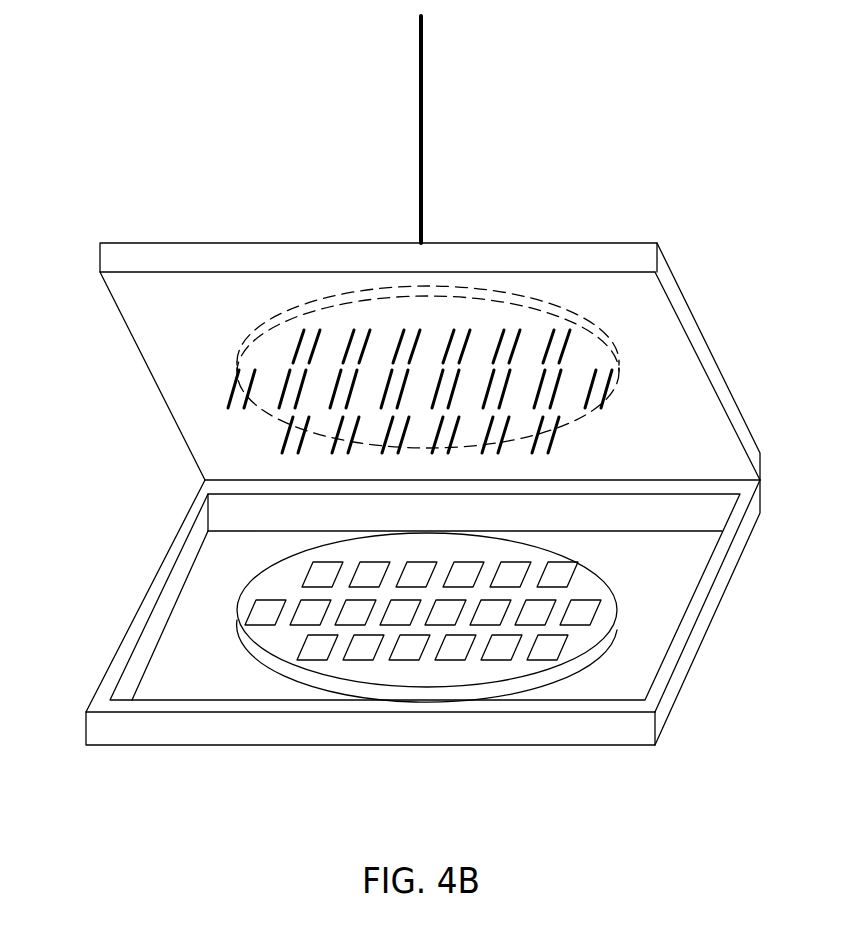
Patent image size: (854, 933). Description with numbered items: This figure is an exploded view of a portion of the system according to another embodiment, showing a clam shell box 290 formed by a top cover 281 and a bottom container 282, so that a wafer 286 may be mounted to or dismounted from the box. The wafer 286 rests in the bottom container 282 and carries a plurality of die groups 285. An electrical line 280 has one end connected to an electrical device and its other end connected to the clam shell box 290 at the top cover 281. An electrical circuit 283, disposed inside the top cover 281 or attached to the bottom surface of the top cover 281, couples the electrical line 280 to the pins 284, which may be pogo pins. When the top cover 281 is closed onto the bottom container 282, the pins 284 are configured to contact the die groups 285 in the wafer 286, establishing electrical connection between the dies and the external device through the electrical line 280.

The electrical line 280 is at (423, 75).
The top cover 281 is at (182, 440).
The bottom container 282 is at (147, 602).
The electrical circuit 283 is at (617, 345).
The pins 284 is at (583, 412).
The die groups 285 is at (305, 661).
The wafer 286 is at (620, 627).
The clam shell box 290 is at (147, 367).